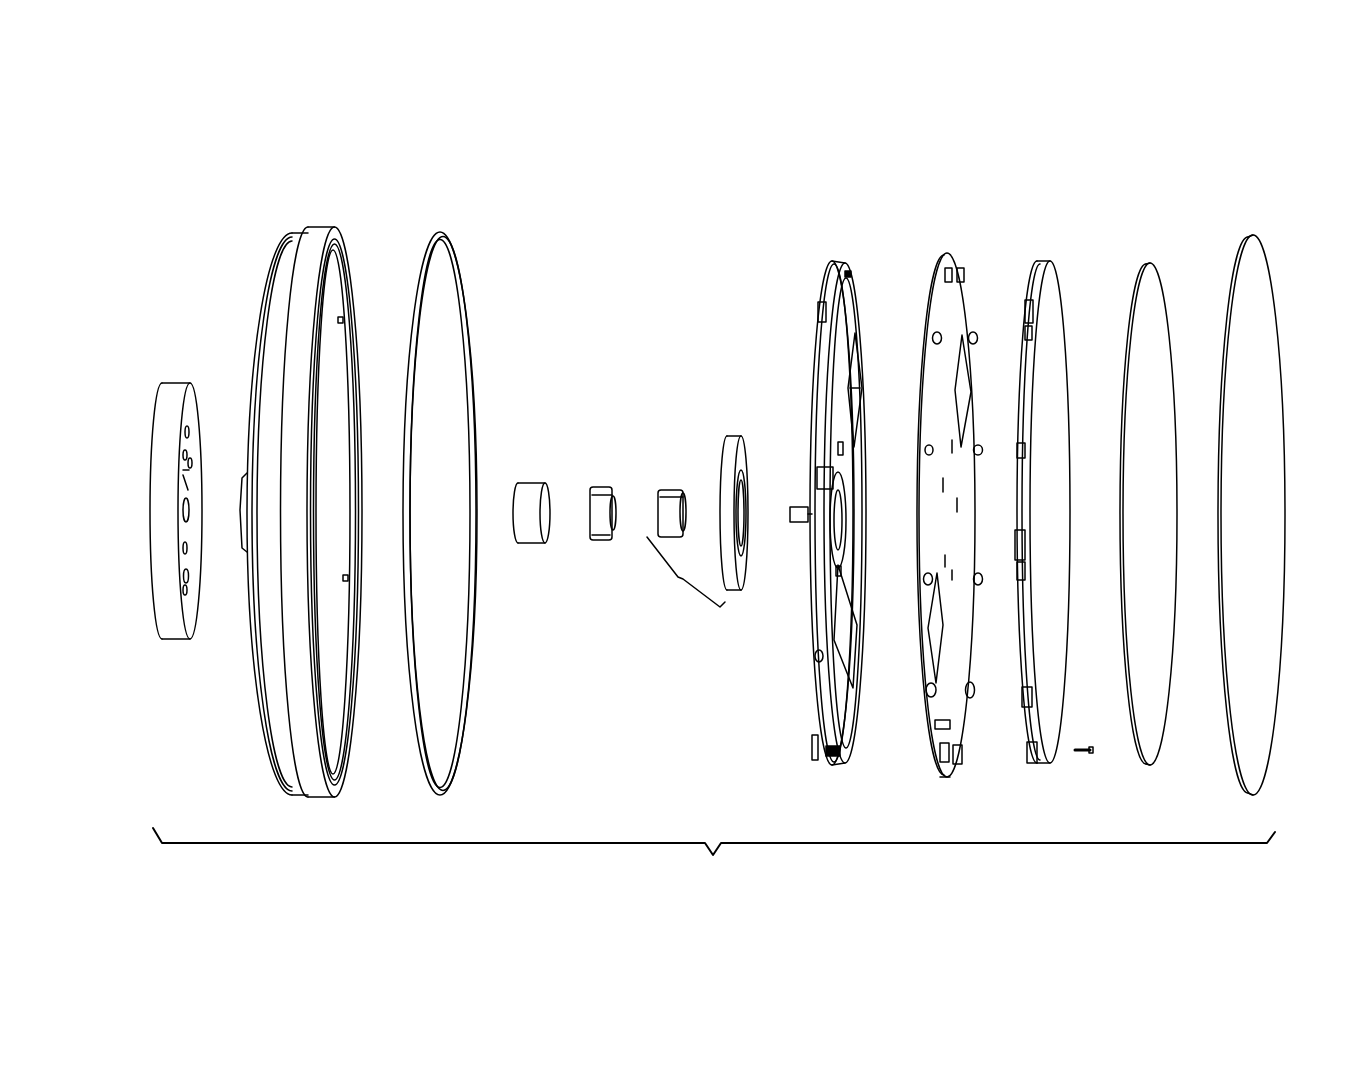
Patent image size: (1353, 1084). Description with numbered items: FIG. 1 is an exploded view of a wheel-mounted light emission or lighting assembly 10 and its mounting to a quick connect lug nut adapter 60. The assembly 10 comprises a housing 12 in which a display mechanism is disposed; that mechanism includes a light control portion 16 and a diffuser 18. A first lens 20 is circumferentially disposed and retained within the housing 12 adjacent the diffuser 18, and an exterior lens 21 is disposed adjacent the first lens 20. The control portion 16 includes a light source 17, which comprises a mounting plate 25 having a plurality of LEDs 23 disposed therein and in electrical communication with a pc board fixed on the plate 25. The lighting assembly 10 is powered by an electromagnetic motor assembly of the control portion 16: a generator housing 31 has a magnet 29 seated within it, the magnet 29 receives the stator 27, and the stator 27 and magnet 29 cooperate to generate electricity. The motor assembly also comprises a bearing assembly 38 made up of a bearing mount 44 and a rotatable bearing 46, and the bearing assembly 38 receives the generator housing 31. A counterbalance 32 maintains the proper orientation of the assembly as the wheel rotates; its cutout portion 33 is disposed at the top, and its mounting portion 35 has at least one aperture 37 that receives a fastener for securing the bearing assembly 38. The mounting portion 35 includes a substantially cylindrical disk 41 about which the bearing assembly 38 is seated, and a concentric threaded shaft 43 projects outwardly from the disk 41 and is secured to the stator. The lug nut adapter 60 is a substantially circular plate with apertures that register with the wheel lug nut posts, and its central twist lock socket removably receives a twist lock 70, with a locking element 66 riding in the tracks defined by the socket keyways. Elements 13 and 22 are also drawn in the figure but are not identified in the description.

The lighting assembly 10 is at (605, 192).
The housing 12 is at (273, 717).
The spoke 13 is at (962, 378).
The light control portion 16 is at (667, 652).
The light source 17 is at (1095, 223).
The diffuser 18 is at (1037, 763).
The first lens 20 is at (1157, 315).
The exterior lens 21 is at (1262, 277).
The pin 22 is at (1083, 753).
The LEDs 23 is at (958, 505).
The mounting plate 25 is at (940, 777).
The stator 27 is at (617, 497).
The magnet 29 is at (602, 537).
The generator housing 31 is at (532, 490).
The counterbalance 32 is at (817, 720).
The cutout portion 33 is at (815, 655).
The mounting portion 35 is at (835, 595).
The aperture 37 is at (840, 448).
The bearing assembly 38 is at (686, 572).
The cylindrical disk 41 is at (810, 527).
The threaded shaft 43 is at (795, 507).
The bearing mount 44 is at (732, 437).
The rotatable bearing 46 is at (672, 493).
The lug nut adapter 60 is at (206, 352).
The locking element 66 is at (185, 577).
The twist lock 70 is at (247, 473).